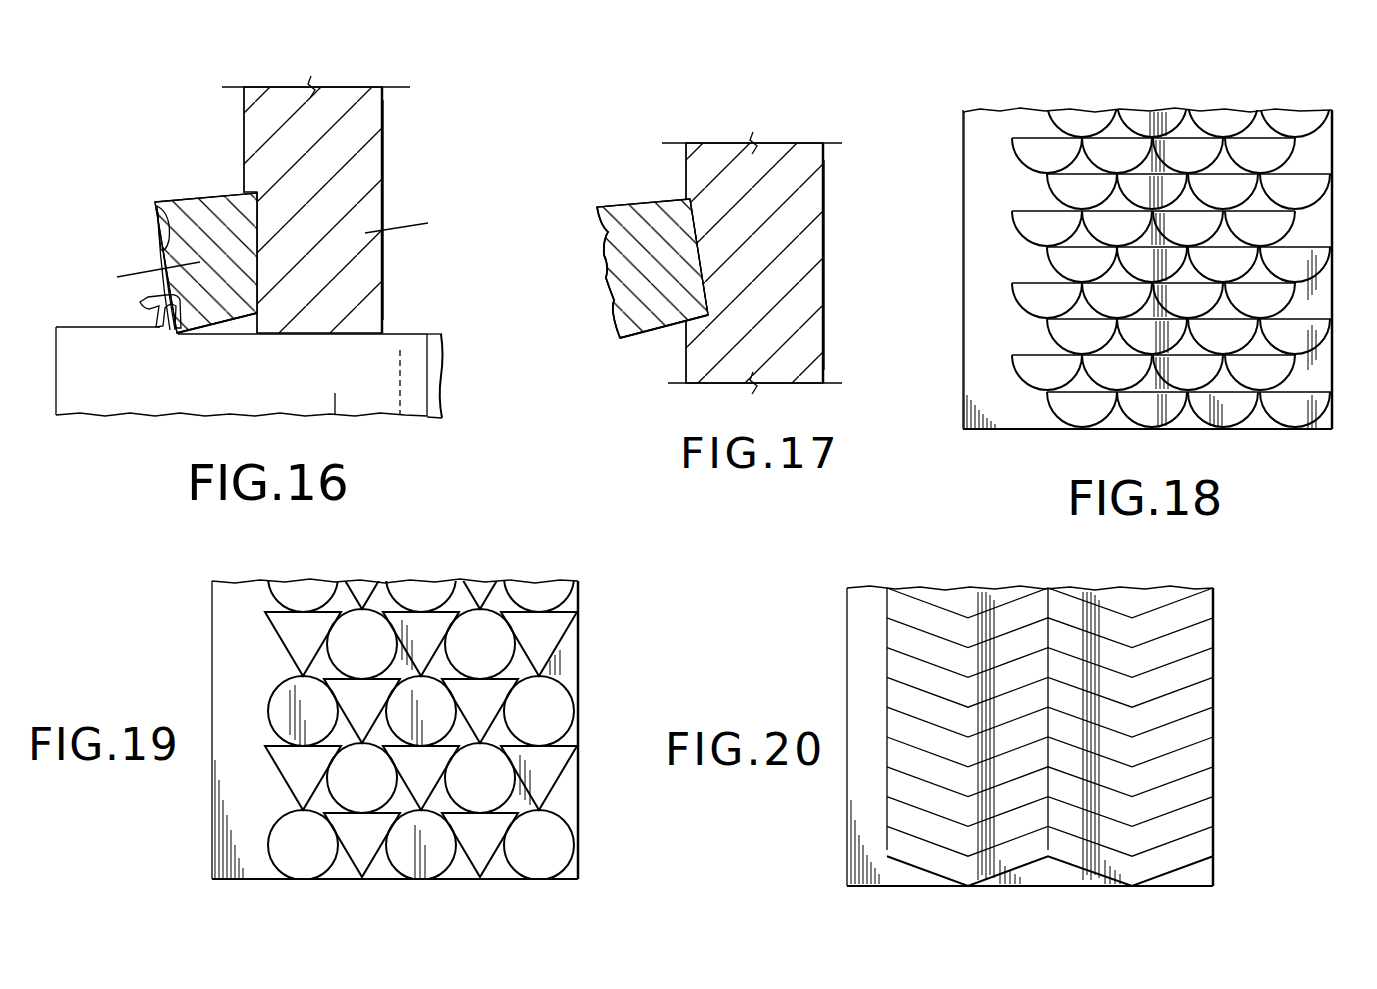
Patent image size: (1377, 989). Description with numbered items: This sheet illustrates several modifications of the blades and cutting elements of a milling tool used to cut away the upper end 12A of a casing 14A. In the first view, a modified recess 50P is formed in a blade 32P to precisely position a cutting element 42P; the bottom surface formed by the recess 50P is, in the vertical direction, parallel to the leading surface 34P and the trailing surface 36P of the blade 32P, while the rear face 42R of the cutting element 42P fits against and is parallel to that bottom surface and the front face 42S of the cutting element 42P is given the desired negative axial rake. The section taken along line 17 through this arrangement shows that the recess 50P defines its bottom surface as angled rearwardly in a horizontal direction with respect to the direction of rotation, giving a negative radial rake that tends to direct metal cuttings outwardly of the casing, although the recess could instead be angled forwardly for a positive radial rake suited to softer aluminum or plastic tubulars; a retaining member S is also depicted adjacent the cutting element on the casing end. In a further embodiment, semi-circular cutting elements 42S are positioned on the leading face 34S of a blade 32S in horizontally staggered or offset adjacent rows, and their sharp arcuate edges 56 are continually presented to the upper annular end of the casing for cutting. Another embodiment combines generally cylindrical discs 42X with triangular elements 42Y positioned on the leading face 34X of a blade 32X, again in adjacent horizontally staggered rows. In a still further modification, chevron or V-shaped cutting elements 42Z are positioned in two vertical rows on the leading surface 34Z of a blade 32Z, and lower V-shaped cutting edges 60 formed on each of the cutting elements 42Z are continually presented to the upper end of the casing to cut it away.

In FIG. 16, the blade 32P is at (384, 122).
In FIG. 17, the blade 32P is at (825, 166).
In FIG. 16, the leading surface 34P is at (244, 124).
In FIG. 17, the leading surface 34P is at (686, 153).
In FIG. 16, the trailing surface 36P is at (384, 152).
In FIG. 17, the trailing surface 36P is at (825, 197).
In FIG. 16, the recess 50P is at (238, 207).
In FIG. 17, the recess 50P is at (660, 213).
In FIG. 16, the front face 42S is at (155, 237).
In FIG. 17, the front face 42S is at (605, 257).
In FIG. 18, the front face 42S is at (1035, 300).
In FIG. 16, the rear face 42R is at (257, 270).
In FIG. 17, the rear face 42R is at (700, 248).
In FIG. 16, the cutting element 42P is at (226, 323).
In FIG. 17, the cutting element 42P is at (637, 342).
In FIG. 16, the section line 17 is at (123, 268).
In FIG. 16, the spring clip S is at (140, 301).
In FIG. 16, the upper end 12A is at (75, 327).
In FIG. 16, the casing 14A is at (431, 379).
In FIG. 18, the blade 32S is at (996, 433).
In FIG. 18, the leading face 34S is at (978, 137).
In FIG. 18, the sharp arcuate edges 56 is at (1152, 430).
In FIG. 19, the blade 32X is at (210, 612).
In FIG. 19, the leading face 34X is at (243, 672).
In FIG. 19, the cylindrical discs 42X is at (363, 640).
In FIG. 19, the triangular elements 42Y is at (540, 637).
In FIG. 20, the blade 32Z is at (845, 598).
In FIG. 20, the leading surface 34Z is at (865, 642).
In FIG. 20, the chevron or V-shaped cutting elements 42Z is at (1165, 625).
In FIG. 20, the lower V-shaped cutting edges 60 is at (1192, 742).